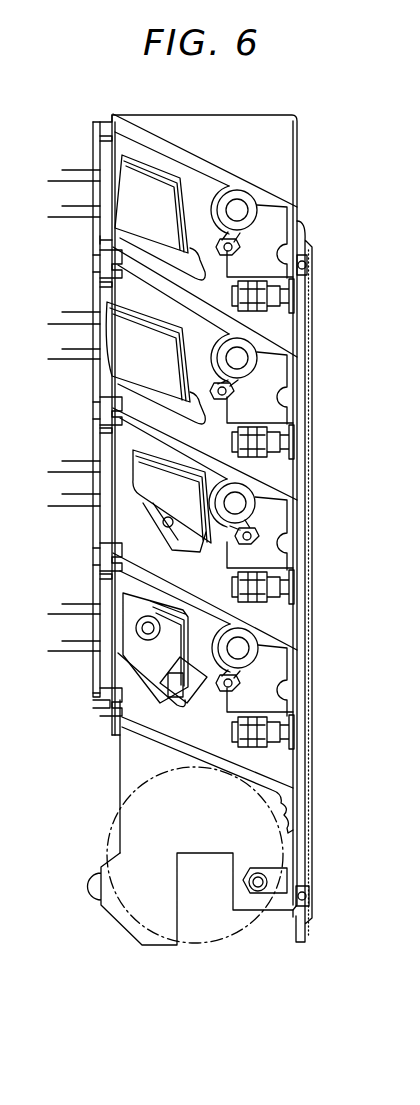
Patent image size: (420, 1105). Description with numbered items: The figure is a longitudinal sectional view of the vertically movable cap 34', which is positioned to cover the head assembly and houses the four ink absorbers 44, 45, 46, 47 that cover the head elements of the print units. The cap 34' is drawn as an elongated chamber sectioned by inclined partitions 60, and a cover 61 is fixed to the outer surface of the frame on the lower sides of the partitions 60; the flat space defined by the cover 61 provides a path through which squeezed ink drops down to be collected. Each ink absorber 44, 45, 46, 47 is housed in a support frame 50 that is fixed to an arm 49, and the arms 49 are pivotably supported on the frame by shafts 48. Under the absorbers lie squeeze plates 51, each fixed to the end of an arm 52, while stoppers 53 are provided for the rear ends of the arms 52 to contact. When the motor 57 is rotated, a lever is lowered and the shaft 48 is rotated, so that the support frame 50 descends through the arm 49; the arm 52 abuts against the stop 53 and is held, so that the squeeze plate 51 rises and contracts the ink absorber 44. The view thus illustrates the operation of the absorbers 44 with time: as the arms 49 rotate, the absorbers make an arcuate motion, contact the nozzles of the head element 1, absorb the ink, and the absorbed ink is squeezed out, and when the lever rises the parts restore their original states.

The head element 1 is at (69, 170).
The ink absorber 44 is at (150, 183).
The ink absorber 45 is at (108, 366).
The ink absorber 46 is at (140, 492).
The ink absorber 47 is at (112, 658).
The shaft 48 is at (238, 212).
The arm 49 is at (202, 258).
The support frame 50 is at (185, 178).
The squeeze plate 51 is at (108, 243).
The arm 52 is at (215, 290).
The stopper 53 is at (307, 273).
The motor 57 is at (232, 940).
The inclined partition 60 is at (258, 350).
The cover 61 is at (313, 858).
The cap 34' is at (344, 765).